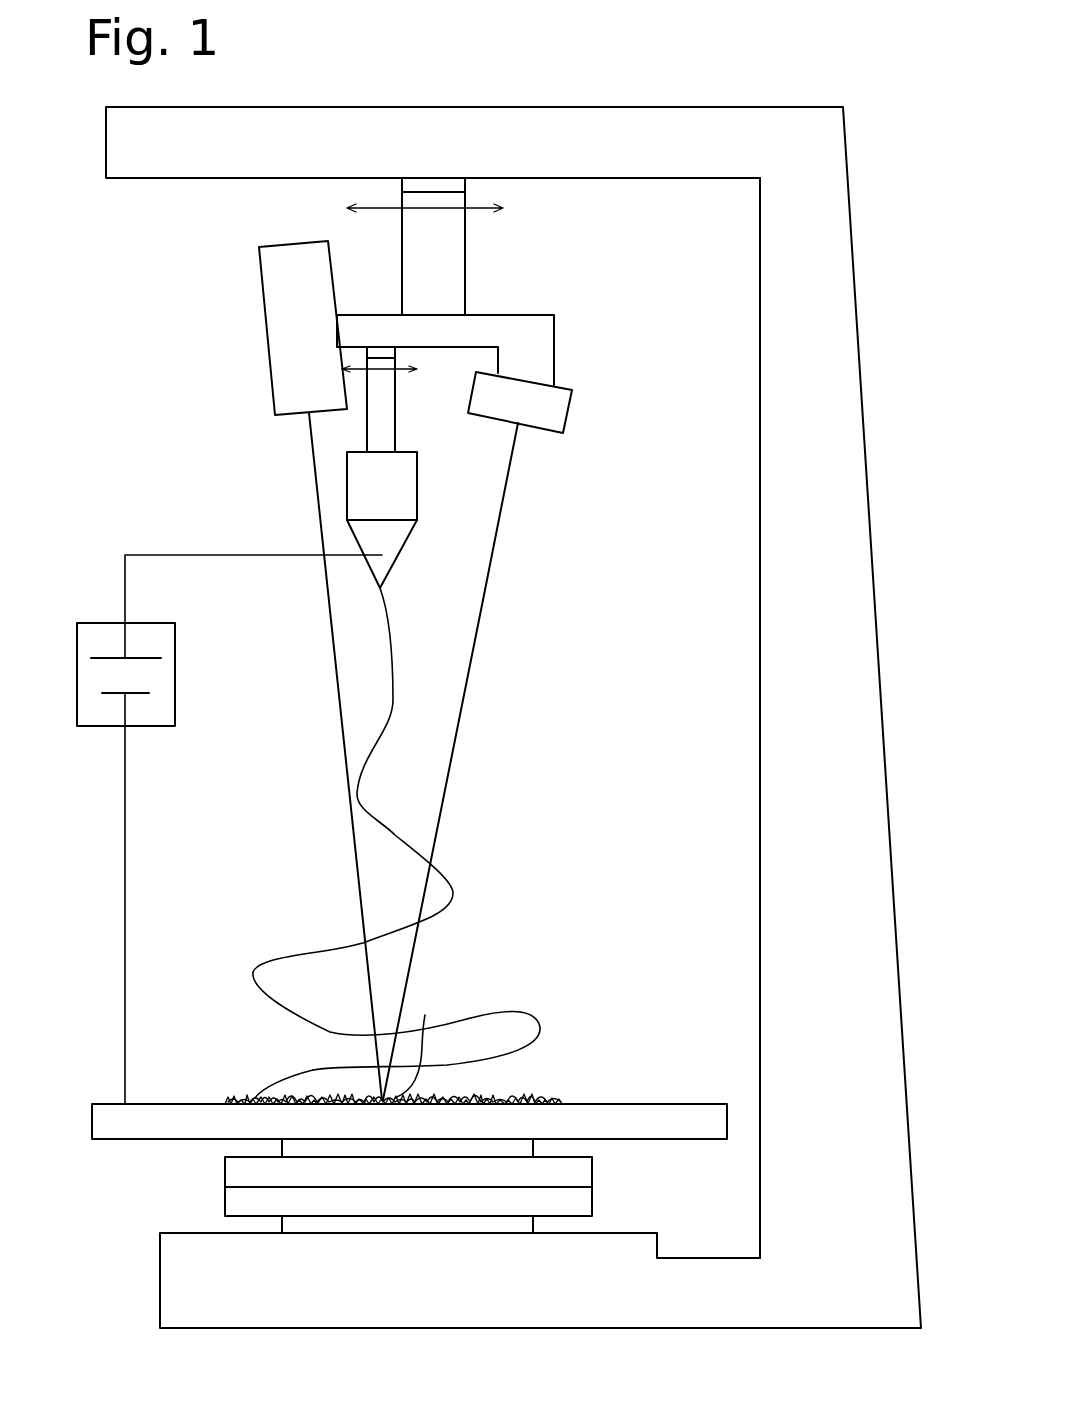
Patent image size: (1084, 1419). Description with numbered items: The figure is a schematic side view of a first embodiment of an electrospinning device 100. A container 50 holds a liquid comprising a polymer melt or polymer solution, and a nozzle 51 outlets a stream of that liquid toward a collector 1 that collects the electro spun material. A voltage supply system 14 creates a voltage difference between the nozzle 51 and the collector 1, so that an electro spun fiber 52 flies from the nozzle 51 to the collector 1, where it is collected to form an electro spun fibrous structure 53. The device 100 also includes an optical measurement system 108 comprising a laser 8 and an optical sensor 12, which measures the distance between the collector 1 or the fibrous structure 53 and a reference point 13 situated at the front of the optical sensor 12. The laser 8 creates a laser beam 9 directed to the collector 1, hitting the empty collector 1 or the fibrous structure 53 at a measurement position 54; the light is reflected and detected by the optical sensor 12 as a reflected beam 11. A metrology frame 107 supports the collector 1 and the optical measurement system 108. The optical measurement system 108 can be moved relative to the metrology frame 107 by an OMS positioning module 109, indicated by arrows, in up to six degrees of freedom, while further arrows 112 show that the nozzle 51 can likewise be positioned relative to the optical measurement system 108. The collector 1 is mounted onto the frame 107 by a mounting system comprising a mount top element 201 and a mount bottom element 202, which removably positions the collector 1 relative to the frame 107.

The electrospinning device 100 is at (735, 88).
The metrology frame 107 is at (790, 777).
The OMS positioning module 109 is at (445, 210).
The arrows 112 is at (380, 372).
The laser 8 is at (282, 332).
The optical measurement system 108 is at (448, 337).
The optical sensor 12 is at (555, 407).
The reference point 13 is at (520, 427).
The laser beam 9 is at (325, 573).
The reflected beam 11 is at (450, 765).
The container 50 is at (352, 457).
The nozzle 51 is at (393, 536).
The electro spun fiber 52 is at (358, 798).
The electro spun fibrous structure 53 is at (240, 1097).
The measurement position 54 is at (425, 1015).
The voltage supply system 14 is at (150, 705).
The collector 1 is at (573, 1118).
The mount top element 201 is at (240, 1168).
The mount bottom element 202 is at (235, 1200).